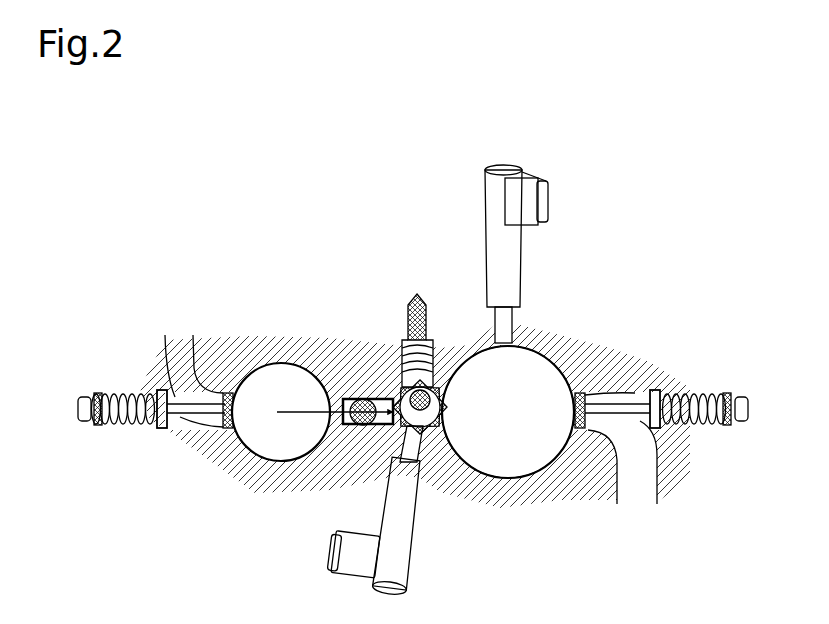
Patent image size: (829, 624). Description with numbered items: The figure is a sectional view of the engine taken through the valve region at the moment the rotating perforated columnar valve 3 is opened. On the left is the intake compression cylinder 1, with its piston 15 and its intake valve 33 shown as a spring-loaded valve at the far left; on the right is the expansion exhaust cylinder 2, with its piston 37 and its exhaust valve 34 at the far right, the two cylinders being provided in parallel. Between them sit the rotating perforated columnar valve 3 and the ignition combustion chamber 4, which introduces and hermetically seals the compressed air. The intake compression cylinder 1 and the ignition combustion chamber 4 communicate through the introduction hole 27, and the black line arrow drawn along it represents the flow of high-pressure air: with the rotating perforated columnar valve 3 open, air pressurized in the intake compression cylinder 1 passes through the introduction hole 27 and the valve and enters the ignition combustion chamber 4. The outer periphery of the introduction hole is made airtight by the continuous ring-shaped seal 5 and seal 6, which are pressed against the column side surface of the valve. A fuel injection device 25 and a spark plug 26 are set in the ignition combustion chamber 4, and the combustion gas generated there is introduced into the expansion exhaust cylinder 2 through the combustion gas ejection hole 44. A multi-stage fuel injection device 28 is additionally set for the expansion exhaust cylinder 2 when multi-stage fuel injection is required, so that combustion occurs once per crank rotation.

The intake compression cylinder 1 is at (262, 466).
The expansion exhaust cylinder 2 is at (565, 356).
The rotating perforated columnar valve 3 is at (356, 398).
The ignition combustion chamber 4 is at (396, 402).
The seal 5 is at (335, 395).
The seal 6 is at (385, 430).
The piston 15 is at (268, 382).
The fuel injection device 25 is at (404, 590).
The spark plug 26 is at (417, 298).
The introduction hole 27 is at (332, 420).
The multi-stage fuel injection device 28 is at (553, 190).
The intake valve 33 is at (78, 392).
The exhaust valve 34 is at (743, 392).
The piston 37 is at (518, 468).
The combustion gas ejection hole 44 is at (512, 350).